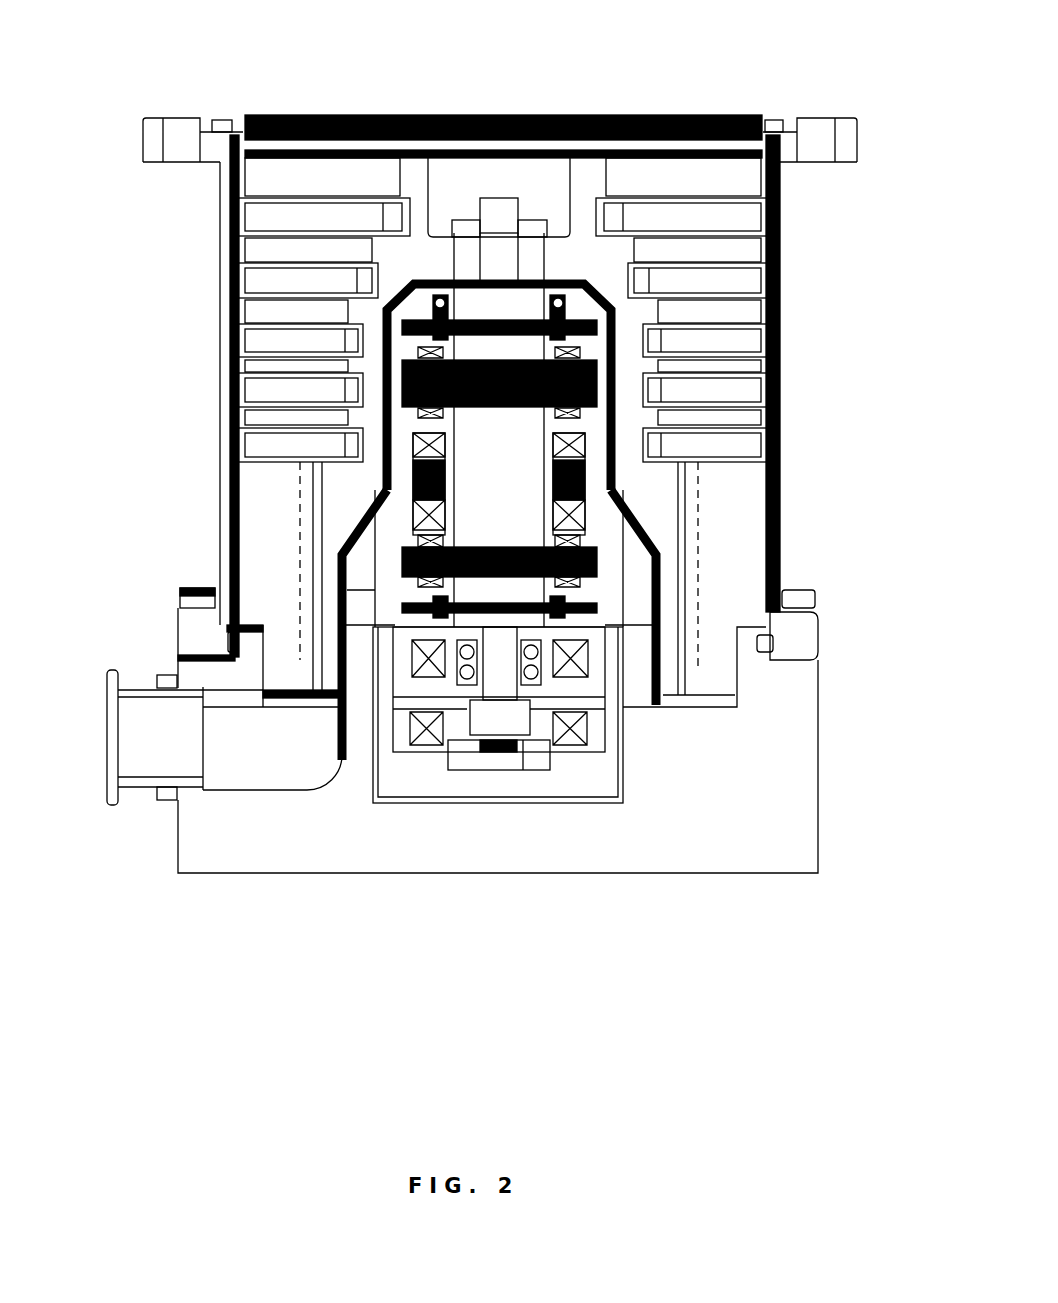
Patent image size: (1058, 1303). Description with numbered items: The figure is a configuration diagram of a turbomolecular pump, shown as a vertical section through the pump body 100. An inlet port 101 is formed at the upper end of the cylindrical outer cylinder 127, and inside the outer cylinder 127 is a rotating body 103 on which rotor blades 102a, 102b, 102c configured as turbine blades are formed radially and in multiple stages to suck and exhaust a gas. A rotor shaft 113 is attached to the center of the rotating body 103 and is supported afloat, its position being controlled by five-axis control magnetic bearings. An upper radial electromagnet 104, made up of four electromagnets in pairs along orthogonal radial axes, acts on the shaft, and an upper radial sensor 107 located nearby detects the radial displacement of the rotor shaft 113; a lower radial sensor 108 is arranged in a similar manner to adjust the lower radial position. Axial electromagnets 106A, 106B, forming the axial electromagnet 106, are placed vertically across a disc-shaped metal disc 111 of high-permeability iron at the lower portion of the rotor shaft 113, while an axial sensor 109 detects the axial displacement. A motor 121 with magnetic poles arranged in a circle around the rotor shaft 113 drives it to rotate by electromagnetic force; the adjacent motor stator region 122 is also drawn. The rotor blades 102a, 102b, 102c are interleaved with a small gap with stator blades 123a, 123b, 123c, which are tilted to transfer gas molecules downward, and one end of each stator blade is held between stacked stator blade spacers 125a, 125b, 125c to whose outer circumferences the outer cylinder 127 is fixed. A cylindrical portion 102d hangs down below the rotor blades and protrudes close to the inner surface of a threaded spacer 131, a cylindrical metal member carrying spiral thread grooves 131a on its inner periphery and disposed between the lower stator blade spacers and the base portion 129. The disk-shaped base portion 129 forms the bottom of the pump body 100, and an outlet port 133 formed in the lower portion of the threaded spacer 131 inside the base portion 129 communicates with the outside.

The pump body 100 is at (536, 34).
The inlet port 101 is at (550, 115).
The rotor blade 102a is at (240, 213).
The rotor blade 102b is at (240, 318).
The rotor blade 102c is at (228, 355).
The cylindrical portion 102d is at (335, 555).
The rotating body 103 is at (440, 202).
The upper radial electromagnet 104 is at (597, 385).
The axial electromagnet 106 is at (590, 612).
The axial electromagnet 106A is at (817, 604).
The axial electromagnet 106B is at (813, 653).
The upper radial sensor 107 is at (600, 307).
The lower radial sensor 108 is at (590, 657).
The axial sensor 109 is at (555, 757).
The metal disc 111 is at (177, 657).
The rotor shaft 113 is at (535, 342).
The motor 121 is at (607, 497).
The motor stator 122 is at (597, 560).
The stator blade 123a is at (240, 250).
The stator blade 123b is at (236, 340).
The stator blade 123c is at (224, 360).
The stator blade spacer 125a is at (240, 170).
The stator blade spacer 125b is at (240, 283).
The stator blade spacer 125c is at (232, 348).
The outer cylinder 127 is at (773, 247).
The base portion 129 is at (738, 705).
The threaded spacer 131 is at (247, 593).
The thread groove 131a is at (300, 518).
The outlet port 133 is at (148, 768).